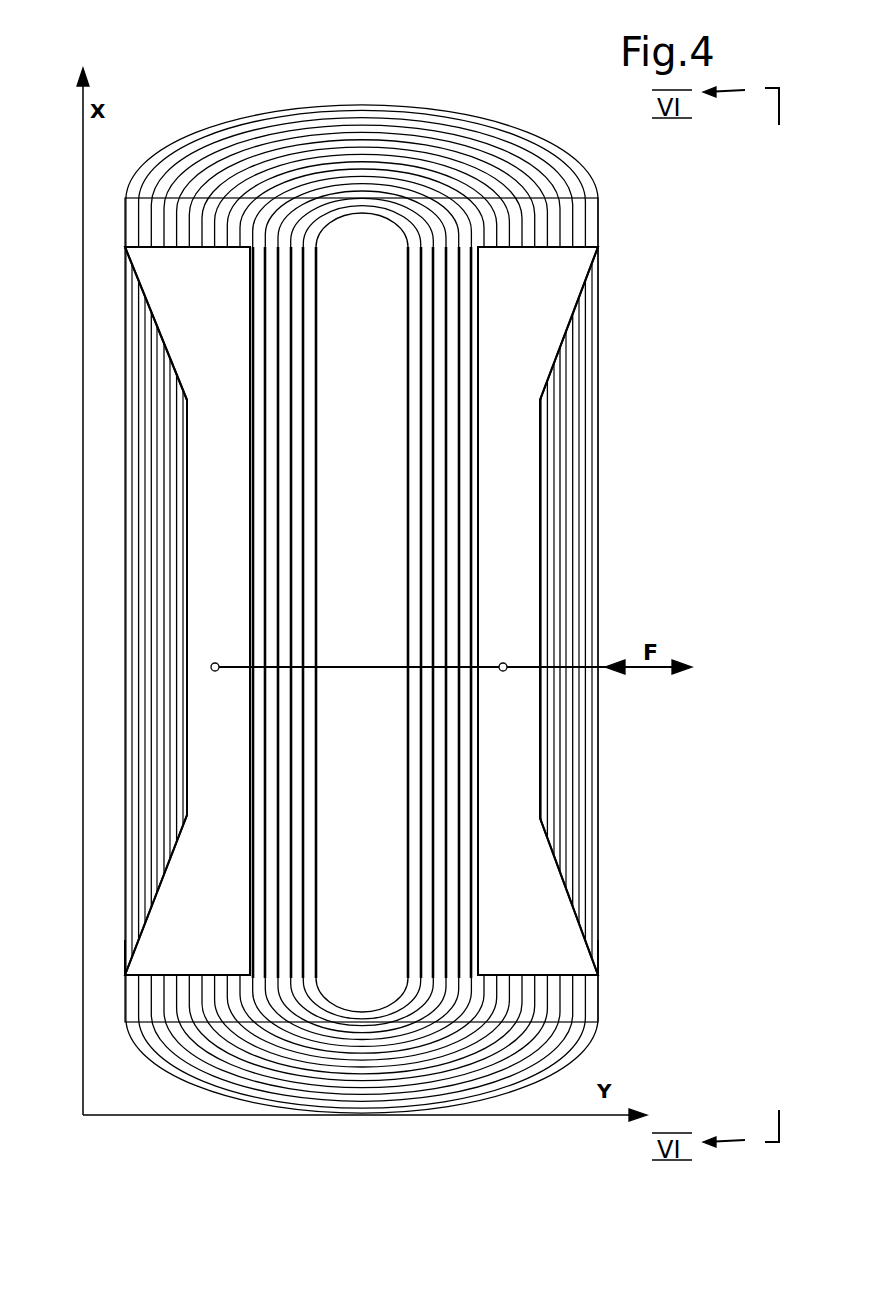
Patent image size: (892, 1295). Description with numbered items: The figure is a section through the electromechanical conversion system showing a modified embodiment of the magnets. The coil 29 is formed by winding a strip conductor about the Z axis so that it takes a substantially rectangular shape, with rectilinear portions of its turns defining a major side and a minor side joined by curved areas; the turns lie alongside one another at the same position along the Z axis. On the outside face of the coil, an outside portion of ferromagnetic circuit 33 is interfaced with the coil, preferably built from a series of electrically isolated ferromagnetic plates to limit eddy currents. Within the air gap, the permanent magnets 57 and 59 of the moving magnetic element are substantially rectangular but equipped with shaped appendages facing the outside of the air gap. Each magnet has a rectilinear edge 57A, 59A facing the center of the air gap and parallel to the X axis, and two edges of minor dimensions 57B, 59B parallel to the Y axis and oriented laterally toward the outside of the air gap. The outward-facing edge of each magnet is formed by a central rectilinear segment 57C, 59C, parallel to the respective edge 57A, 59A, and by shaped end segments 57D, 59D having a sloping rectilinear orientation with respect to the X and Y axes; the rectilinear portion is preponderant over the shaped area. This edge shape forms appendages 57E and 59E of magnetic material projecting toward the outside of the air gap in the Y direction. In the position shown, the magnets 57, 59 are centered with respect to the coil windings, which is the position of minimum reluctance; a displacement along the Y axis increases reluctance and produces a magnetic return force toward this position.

The coil 29 is at (483, 122).
The outside portion of ferromagnetic circuit 33 is at (127, 1026).
The permanent magnet 57 is at (232, 541).
The rectilinear edge 57A is at (262, 786).
The edges of minor dimensions 57B is at (190, 248).
The central rectilinear segment 57C is at (178, 582).
The shaped end segments 57D is at (152, 326).
The appendage 57E is at (147, 959).
The permanent magnet 59 is at (522, 541).
The rectilinear edge 59A is at (470, 806).
The edges of minor dimensions 59B is at (538, 248).
The central rectilinear segment 59C is at (546, 566).
The shaped end segments 59D is at (583, 300).
The appendage 59E is at (574, 960).